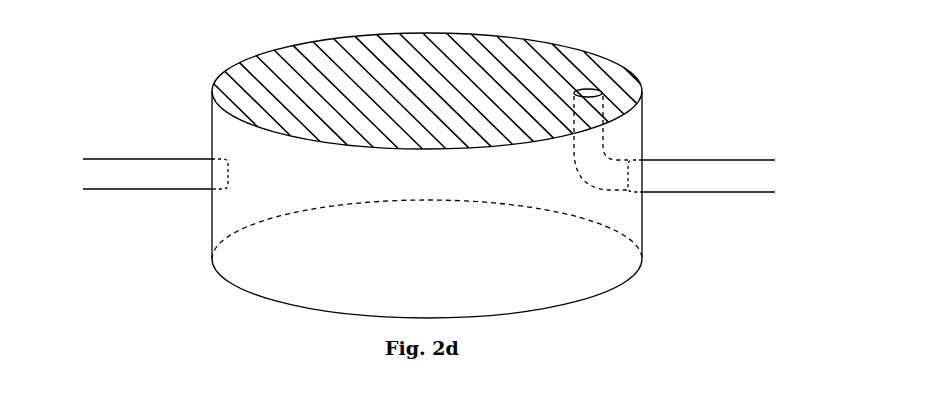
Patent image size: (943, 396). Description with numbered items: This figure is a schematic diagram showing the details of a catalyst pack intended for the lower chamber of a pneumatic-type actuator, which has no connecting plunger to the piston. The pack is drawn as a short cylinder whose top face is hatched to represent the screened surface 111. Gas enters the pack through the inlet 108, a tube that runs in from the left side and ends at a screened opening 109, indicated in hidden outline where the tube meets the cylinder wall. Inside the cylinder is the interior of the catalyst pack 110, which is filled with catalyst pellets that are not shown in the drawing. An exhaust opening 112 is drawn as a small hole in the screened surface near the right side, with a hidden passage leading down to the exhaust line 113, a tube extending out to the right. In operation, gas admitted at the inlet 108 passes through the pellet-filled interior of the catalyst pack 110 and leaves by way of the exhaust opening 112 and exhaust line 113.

The inlet 108 is at (131, 191).
The screened opening 109 is at (230, 172).
The interior of the catalyst pack 110 is at (237, 213).
The screened surface 111 is at (249, 93).
The exhaust opening 112 is at (594, 87).
The exhaust line 113 is at (691, 193).